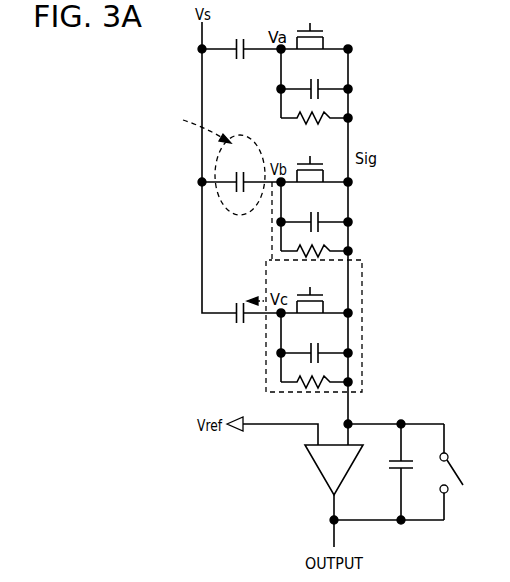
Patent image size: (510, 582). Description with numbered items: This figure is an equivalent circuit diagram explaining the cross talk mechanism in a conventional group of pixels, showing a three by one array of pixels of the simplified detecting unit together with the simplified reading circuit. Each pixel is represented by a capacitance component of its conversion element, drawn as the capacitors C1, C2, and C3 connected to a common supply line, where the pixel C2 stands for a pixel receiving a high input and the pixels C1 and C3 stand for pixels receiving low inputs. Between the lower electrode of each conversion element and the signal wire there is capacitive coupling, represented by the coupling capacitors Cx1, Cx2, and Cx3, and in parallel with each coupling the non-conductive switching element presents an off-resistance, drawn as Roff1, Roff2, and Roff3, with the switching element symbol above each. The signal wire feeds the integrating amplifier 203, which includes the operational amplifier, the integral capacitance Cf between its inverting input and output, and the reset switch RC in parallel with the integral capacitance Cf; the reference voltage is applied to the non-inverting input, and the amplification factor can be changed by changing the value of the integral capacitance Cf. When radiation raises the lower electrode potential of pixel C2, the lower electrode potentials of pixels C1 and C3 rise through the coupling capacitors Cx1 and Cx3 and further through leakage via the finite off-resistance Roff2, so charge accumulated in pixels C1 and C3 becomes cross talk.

The integrating amplifier 203 is at (312, 467).
The capacitance component of conversion element (low-input pixel) C1 is at (241, 38).
The capacitance component of conversion element (high-input pixel) C2 is at (232, 167).
The capacitance component of conversion element (low-input pixel) C3 is at (256, 302).
The coupling capacitor Cx1 is at (314, 77).
The coupling capacitor Cx2 is at (314, 209).
The coupling capacitor Cx3 is at (314, 341).
The off-resistance Roff1 is at (314, 131).
The off-resistance Roff2 is at (314, 264).
The off-resistance Roff3 is at (314, 394).
The integral capacitance Cf is at (407, 472).
The reset switch RC is at (457, 472).